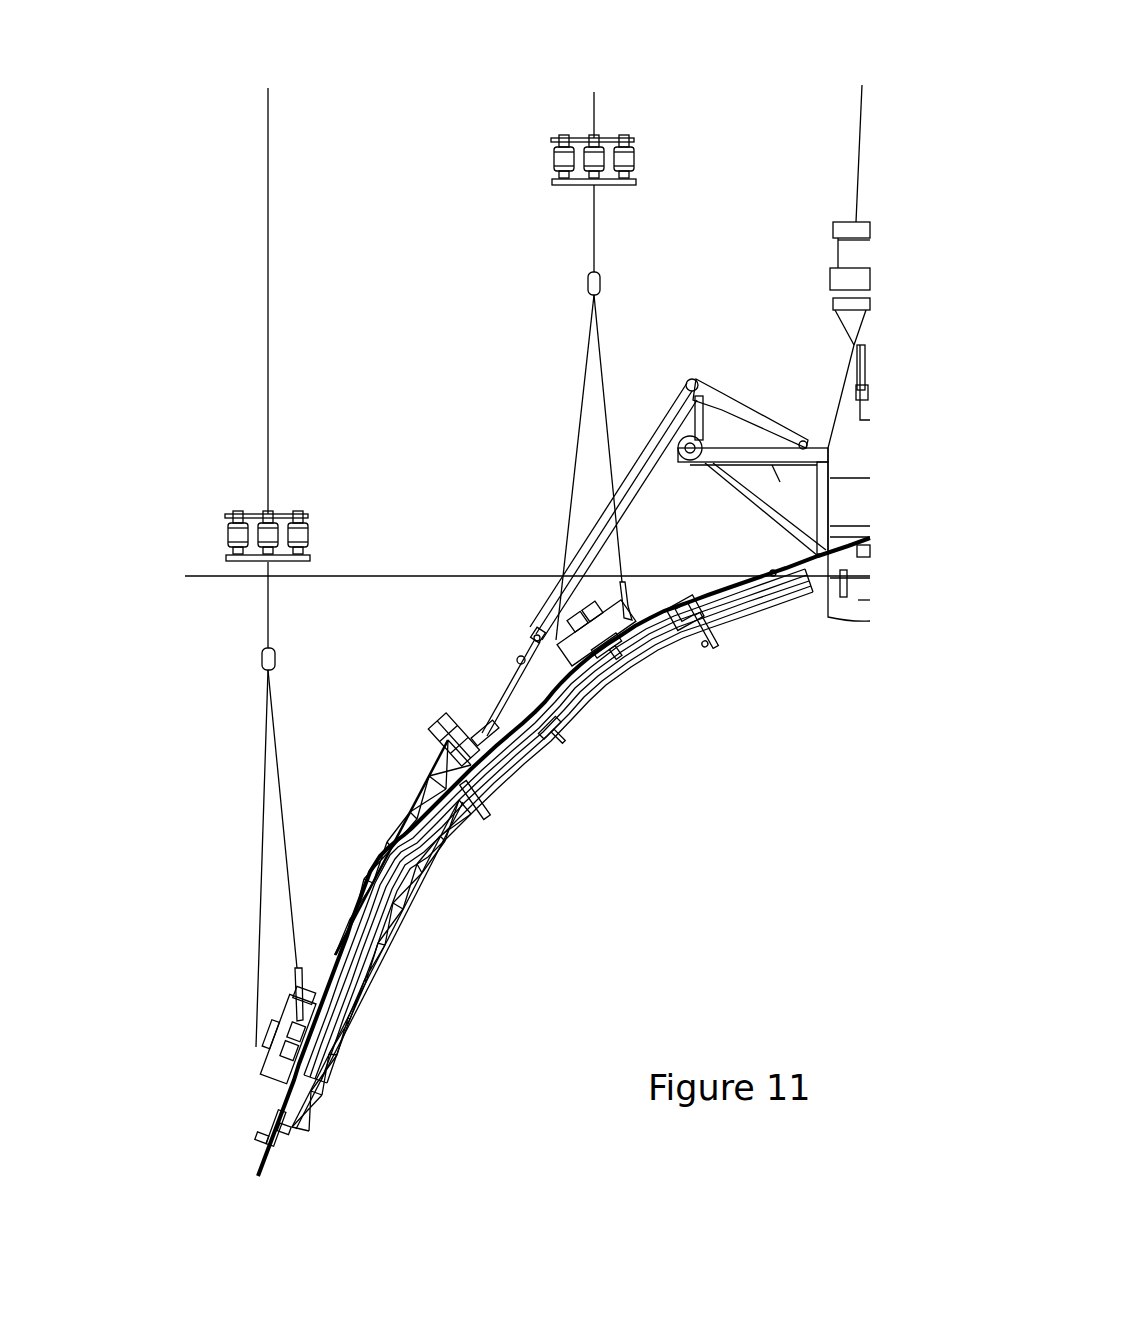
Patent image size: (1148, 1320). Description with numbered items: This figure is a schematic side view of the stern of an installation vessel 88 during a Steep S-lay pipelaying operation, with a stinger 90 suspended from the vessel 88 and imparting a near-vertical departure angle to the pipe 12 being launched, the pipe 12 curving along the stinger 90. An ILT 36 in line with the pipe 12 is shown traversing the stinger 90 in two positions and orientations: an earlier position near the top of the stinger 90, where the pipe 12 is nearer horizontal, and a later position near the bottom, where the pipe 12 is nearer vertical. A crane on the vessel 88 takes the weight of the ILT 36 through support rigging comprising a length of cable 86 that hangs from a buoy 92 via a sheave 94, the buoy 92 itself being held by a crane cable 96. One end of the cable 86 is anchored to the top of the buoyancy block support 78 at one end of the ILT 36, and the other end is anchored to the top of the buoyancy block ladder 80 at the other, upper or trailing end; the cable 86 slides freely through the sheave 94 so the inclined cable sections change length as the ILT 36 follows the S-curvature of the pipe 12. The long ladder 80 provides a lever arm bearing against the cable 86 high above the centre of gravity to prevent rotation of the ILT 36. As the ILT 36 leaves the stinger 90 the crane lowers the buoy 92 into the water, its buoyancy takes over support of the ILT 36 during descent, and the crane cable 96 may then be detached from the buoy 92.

The pipe 12 is at (728, 590).
The ILT 36 is at (572, 610).
The buoyancy block support 78 is at (543, 658).
The buoyancy block ladder 80 is at (625, 583).
The cable 86 is at (580, 427).
The installation vessel 88 is at (847, 380).
The stinger 90 is at (487, 817).
The buoy 92 is at (553, 139).
The sheave 94 is at (589, 282).
The crane cable 96 is at (595, 105).